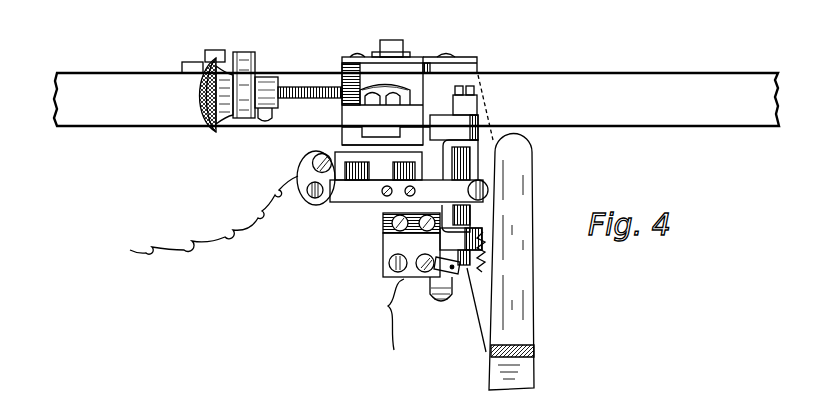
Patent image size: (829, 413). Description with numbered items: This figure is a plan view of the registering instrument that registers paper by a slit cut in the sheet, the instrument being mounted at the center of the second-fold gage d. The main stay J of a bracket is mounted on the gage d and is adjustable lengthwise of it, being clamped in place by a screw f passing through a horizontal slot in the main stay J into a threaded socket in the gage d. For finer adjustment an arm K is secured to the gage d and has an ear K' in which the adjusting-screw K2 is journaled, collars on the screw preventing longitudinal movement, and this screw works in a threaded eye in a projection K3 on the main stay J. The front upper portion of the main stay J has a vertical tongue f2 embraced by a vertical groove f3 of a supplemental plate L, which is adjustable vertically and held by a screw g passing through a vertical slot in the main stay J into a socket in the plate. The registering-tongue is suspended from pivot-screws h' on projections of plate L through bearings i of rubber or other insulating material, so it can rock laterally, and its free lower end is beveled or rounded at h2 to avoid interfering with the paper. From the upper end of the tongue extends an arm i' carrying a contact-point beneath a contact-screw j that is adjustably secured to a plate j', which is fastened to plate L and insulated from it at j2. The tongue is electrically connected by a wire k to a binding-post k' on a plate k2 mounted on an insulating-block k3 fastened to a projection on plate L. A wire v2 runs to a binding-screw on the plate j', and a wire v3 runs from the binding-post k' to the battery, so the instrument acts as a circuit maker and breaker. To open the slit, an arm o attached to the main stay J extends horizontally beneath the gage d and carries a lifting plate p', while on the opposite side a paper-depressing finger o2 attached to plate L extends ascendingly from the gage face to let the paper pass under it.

The gage d is at (416, 99).
The arm K is at (201, 83).
The ear K' is at (255, 70).
The adjusting-screw K2 is at (306, 88).
The projection K3 is at (342, 68).
The main stay J is at (410, 72).
The screw f is at (393, 41).
The screw g is at (401, 104).
The vertical tongue f2 is at (381, 120).
The vertical groove f3 is at (346, 136).
The supplemental plate L is at (347, 129).
The insulation j2 is at (420, 142).
The pivot-screws h' is at (500, 113).
The plate j' is at (302, 177).
The contact-screw j is at (305, 218).
The arm i' is at (378, 190).
The bearings i is at (409, 185).
The wire v2 is at (262, 221).
The insulating-block k3 is at (385, 232).
The plate k2 is at (385, 260).
The binding-post k' is at (426, 292).
The beveled or rounded end h2 is at (462, 250).
The wire v3 is at (377, 314).
The finger o2 is at (441, 297).
The wire k is at (468, 310).
The arm o is at (468, 282).
The blade p' is at (511, 262).